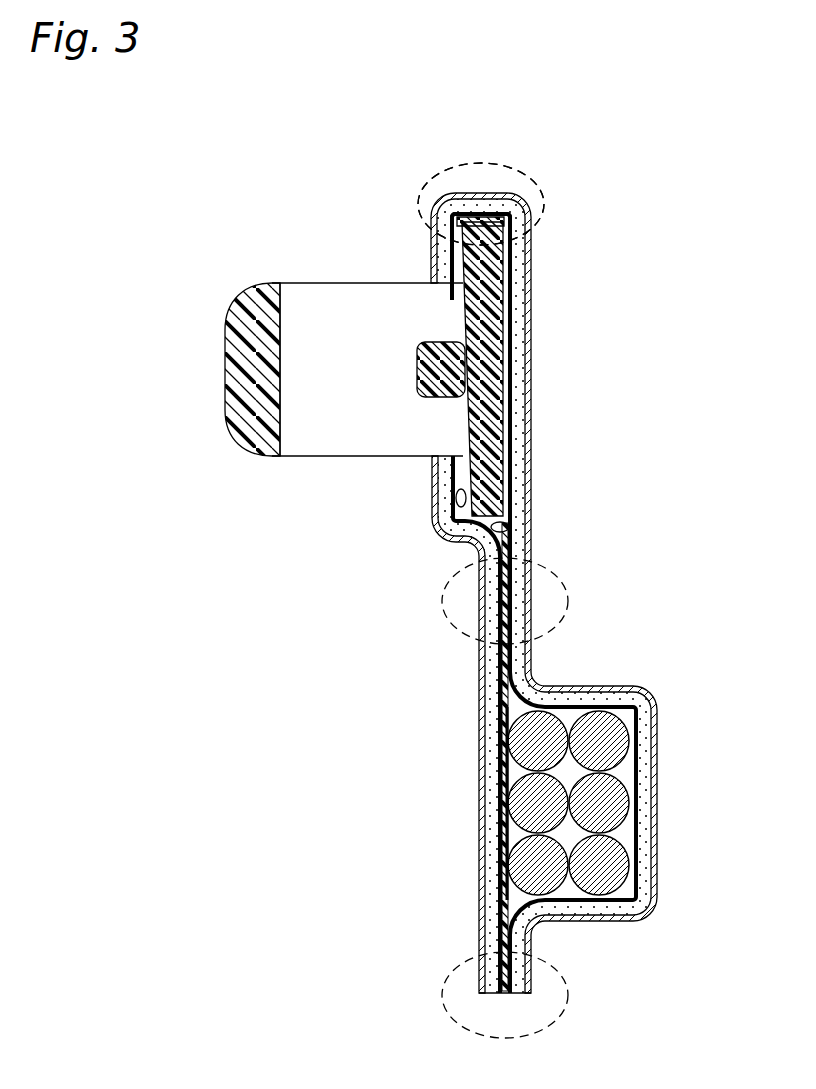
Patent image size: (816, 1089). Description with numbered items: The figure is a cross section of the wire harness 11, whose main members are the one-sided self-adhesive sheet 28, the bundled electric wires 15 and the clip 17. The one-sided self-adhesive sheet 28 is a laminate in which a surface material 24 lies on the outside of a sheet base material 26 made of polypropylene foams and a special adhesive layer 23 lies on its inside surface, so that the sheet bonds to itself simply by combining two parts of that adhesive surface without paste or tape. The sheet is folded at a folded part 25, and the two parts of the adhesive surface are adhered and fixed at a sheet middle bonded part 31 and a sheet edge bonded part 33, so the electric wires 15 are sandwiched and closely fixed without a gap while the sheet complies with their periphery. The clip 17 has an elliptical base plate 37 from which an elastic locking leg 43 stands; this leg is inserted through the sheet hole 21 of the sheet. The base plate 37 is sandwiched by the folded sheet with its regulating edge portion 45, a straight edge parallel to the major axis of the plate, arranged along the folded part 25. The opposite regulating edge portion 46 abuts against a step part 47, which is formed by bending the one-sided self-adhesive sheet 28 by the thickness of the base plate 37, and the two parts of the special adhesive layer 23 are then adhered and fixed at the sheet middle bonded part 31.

The wire harness 11 is at (602, 137).
The electric wires 15 is at (526, 801).
The clip 17 is at (299, 268).
The sheet hole 21 is at (460, 299).
The special adhesive layer 23 is at (497, 466).
The surface material 24 is at (522, 400).
The folded part 25 is at (544, 203).
The sheet base material 26 is at (531, 347).
The one-sided self-adhesive sheet 28 is at (657, 331).
The sheet middle bonded part 31 is at (568, 600).
The sheet edge bonded part 33 is at (568, 995).
The base plate 37 is at (505, 290).
The elastic locking leg 43 is at (240, 440).
The regulating edge portion 45 is at (482, 205).
The regulating edge portion 46 is at (503, 533).
The step part 47 is at (460, 494).